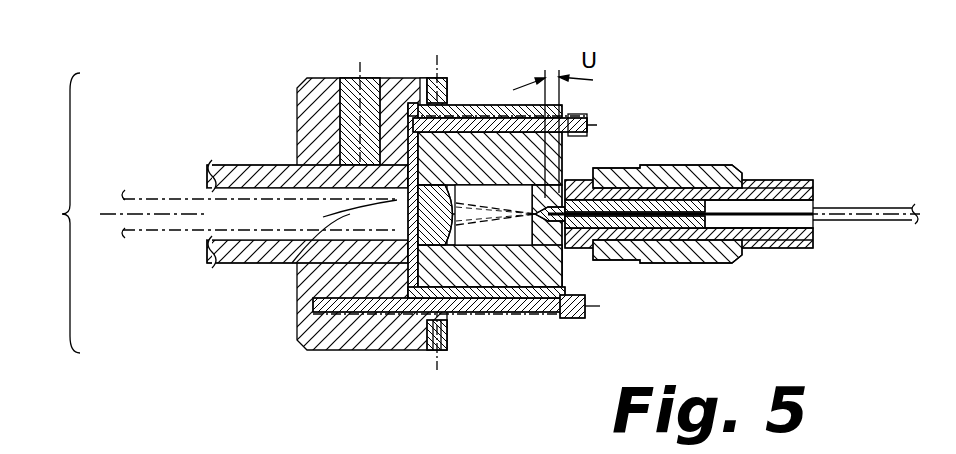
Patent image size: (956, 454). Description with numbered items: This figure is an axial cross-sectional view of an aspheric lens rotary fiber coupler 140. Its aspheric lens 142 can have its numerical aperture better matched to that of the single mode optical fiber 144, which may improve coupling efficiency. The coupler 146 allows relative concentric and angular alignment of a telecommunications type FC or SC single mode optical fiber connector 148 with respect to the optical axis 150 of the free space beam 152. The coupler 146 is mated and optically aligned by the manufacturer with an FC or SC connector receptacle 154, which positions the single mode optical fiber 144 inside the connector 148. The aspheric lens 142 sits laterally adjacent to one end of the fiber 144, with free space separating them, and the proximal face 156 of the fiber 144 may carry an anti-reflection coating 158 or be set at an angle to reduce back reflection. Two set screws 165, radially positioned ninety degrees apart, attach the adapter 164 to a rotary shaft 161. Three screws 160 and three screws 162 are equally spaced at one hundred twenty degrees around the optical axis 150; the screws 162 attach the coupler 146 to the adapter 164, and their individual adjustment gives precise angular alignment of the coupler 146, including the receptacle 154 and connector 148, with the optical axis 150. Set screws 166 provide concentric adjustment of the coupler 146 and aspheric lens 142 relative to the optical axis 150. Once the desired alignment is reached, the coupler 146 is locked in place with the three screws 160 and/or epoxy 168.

The aspheric lens rotary fiber coupler 140 is at (48, 213).
The aspheric lens 142 is at (484, 293).
The single mode optical fiber 144 is at (845, 210).
The coupler 146 is at (484, 108).
The single mode optical fiber connector 148 is at (690, 166).
The optical axis 150 is at (165, 210).
The free space beam 152 is at (160, 232).
The connector receptacle 154 is at (547, 283).
The proximal face 156 is at (548, 232).
The anti-reflection coating 158 is at (697, 263).
The screws 160 is at (500, 112).
The rotary shaft 161 is at (240, 172).
The screws 162 is at (430, 352).
The adapter 164 is at (312, 133).
The set screws 165 is at (356, 80).
The set screws 166 is at (436, 96).
The epoxy 168 is at (292, 263).